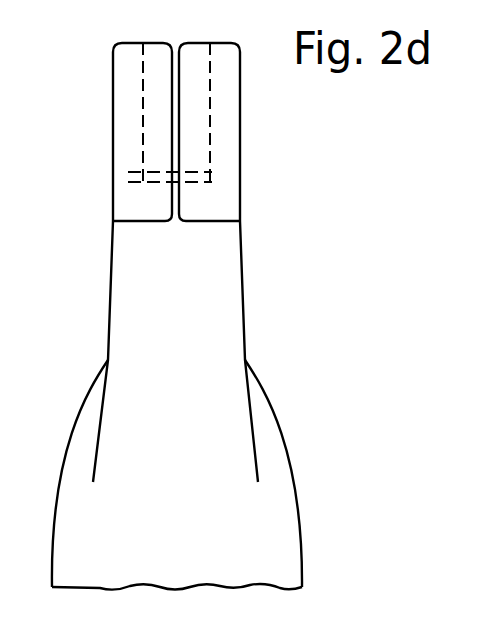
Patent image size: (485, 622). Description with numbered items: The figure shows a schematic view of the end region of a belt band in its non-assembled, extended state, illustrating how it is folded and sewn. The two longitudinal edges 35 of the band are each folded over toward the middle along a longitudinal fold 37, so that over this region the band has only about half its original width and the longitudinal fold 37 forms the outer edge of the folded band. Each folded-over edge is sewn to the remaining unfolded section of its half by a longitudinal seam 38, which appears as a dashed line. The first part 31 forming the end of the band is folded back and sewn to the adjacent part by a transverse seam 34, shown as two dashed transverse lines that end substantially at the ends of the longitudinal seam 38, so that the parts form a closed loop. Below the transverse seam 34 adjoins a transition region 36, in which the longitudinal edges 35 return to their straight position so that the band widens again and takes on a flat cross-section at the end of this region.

The first part 31 is at (241, 136).
The transverse seam 34 is at (210, 172).
The longitudinal edges 35 is at (183, 88).
The transition region 36 is at (284, 444).
The longitudinal fold 37 is at (112, 148).
The longitudinal seam 38 is at (143, 93).